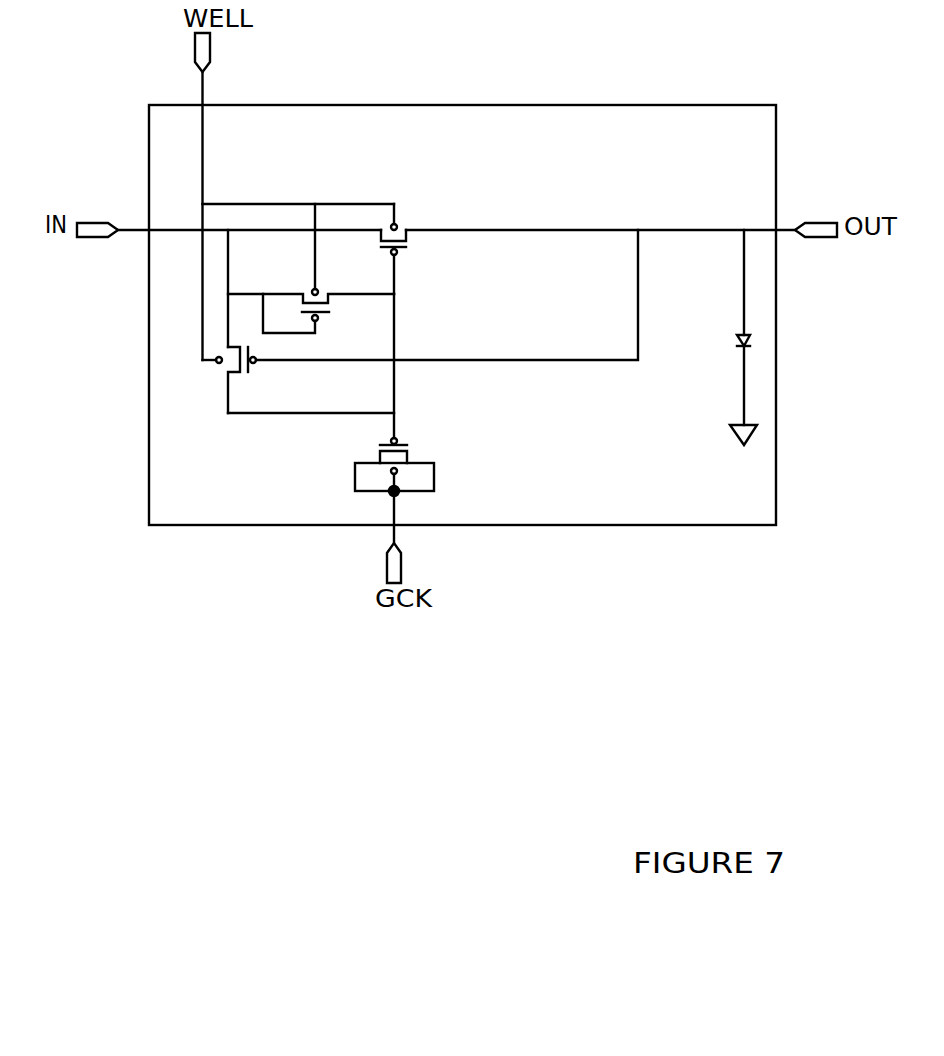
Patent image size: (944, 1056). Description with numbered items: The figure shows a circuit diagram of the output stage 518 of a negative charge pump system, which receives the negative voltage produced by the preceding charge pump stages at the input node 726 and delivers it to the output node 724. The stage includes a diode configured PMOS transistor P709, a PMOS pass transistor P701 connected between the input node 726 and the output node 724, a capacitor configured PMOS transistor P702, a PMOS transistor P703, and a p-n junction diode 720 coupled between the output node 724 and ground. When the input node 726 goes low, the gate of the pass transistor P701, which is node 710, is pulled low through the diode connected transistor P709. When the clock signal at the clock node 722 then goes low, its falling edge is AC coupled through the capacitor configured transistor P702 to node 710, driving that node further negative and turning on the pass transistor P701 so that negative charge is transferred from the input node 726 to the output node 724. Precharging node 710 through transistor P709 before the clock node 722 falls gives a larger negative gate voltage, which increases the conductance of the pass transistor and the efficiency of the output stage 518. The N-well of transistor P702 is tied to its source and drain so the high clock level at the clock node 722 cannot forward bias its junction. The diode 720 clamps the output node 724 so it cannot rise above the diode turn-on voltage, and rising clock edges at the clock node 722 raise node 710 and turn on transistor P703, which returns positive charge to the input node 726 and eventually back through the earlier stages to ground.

The output stage 518 is at (678, 525).
The IN 726 is at (183, 227).
The OUT 724 is at (756, 229).
The p-n junction diode 720 is at (740, 340).
The node 710 is at (395, 433).
The GCK 722 is at (395, 515).
The PMOS pass transistor P701 is at (375, 240).
The diode configured PMOS transistor P709 is at (302, 297).
The PMOS transistor P703 is at (235, 375).
The capacitor configured PMOS transistor P702 is at (410, 457).